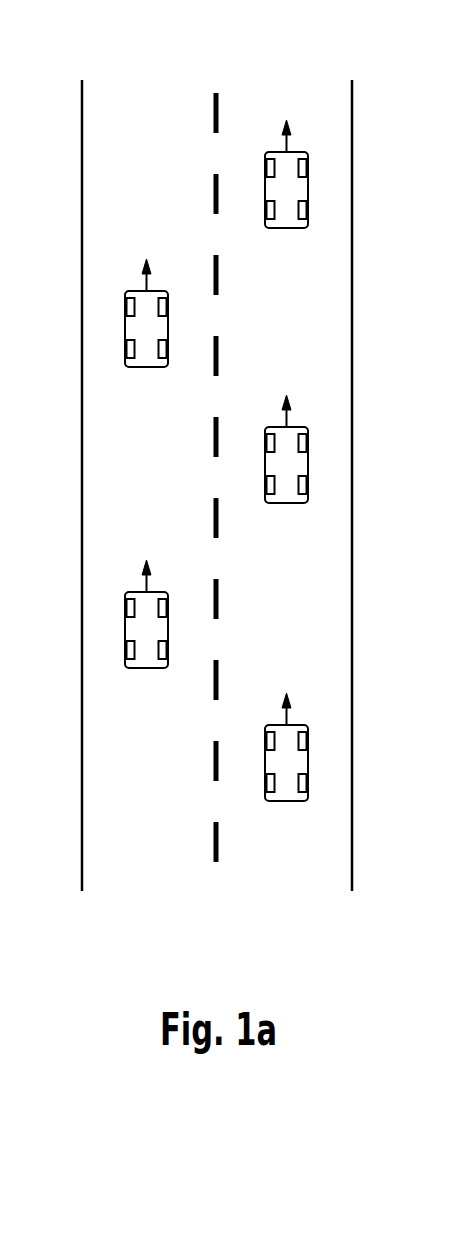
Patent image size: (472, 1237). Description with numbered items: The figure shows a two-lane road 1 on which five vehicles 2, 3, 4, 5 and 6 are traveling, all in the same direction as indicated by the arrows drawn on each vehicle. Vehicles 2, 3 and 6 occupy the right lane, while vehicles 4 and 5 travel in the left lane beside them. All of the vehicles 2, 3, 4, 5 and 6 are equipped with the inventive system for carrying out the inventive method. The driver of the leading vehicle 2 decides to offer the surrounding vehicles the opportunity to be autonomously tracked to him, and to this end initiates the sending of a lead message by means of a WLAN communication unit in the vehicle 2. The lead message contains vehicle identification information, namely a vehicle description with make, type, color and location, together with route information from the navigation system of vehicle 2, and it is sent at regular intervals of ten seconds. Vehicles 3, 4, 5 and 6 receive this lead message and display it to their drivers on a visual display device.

The two-lane road 1 is at (308, 312).
The vehicle 2 is at (308, 188).
The vehicle 3 is at (308, 466).
The vehicle 4 is at (125, 328).
The vehicle 5 is at (125, 630).
The vehicle 6 is at (308, 766).